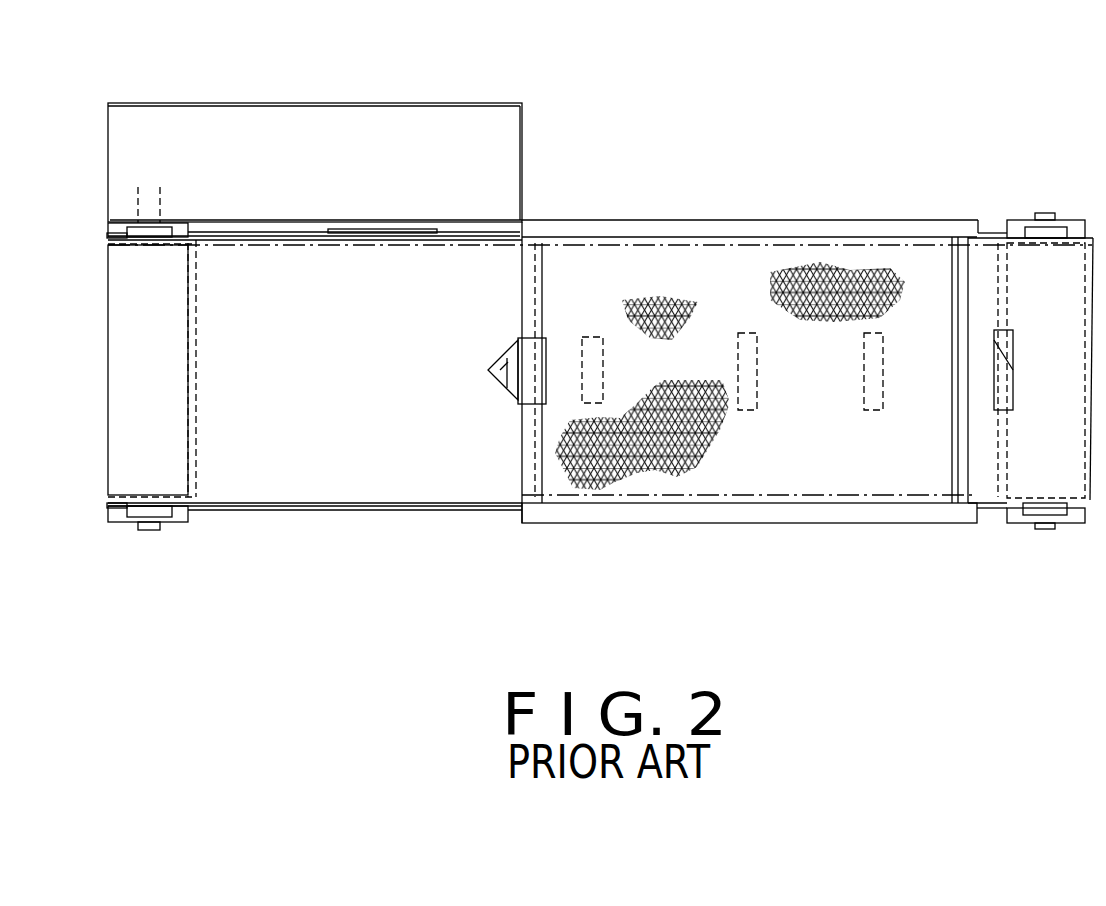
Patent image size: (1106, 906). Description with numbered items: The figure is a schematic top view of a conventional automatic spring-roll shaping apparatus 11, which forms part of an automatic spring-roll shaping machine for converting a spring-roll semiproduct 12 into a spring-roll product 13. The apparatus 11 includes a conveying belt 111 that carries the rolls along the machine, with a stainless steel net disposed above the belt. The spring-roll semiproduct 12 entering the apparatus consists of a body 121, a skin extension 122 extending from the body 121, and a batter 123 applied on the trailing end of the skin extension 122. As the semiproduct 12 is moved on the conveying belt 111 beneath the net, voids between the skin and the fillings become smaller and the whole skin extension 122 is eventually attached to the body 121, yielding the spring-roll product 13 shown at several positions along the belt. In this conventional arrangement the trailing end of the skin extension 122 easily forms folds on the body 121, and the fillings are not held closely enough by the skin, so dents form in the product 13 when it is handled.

The automatic spring-roll shaping apparatus 11 is at (731, 172).
The conveying belt 111 is at (254, 492).
The spring-roll semiproduct 12 is at (500, 390).
The body 121 is at (516, 405).
The skin extension 122 is at (498, 364).
The batter 123 is at (500, 378).
The spring-roll product 13 is at (583, 340).